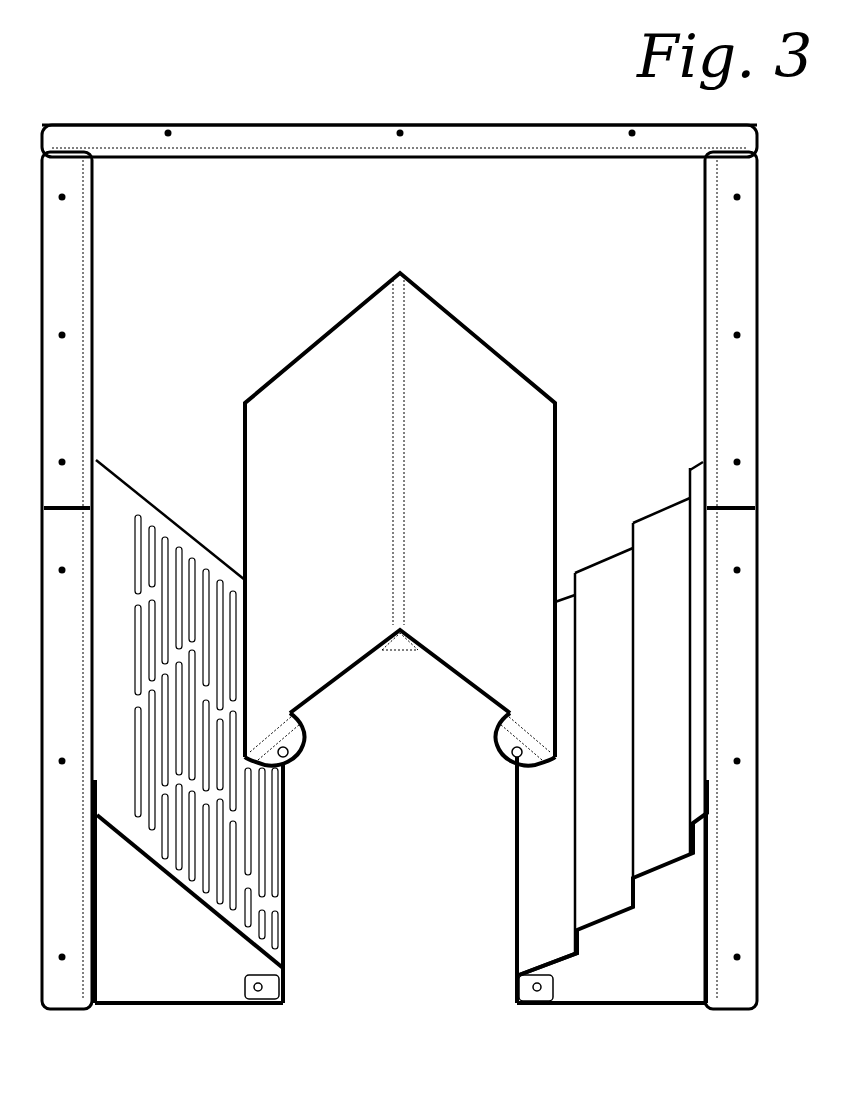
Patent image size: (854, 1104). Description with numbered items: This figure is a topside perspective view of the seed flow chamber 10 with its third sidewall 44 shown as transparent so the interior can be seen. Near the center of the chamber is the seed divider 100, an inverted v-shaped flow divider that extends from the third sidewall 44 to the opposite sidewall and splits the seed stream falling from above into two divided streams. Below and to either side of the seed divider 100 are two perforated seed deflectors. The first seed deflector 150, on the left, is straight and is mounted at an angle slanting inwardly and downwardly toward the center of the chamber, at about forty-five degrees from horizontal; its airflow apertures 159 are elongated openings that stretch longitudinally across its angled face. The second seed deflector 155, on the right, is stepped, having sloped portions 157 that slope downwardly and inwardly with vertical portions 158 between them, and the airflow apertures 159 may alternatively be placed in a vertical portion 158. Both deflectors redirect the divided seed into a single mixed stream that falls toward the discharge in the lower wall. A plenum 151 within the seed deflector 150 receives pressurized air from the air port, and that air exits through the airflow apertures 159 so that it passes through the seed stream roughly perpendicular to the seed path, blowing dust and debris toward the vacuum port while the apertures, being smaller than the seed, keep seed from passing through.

The seed flow chamber 10 is at (259, 108).
The third sidewall 44 is at (229, 281).
The seed divider 100 is at (472, 534).
The first seed deflector 150 is at (207, 908).
The plenum 151 is at (155, 1010).
The second seed deflector 155 is at (512, 912).
The sloped portions 157 is at (608, 920).
The vertical portions 158 is at (579, 942).
The airflow apertures 159 is at (284, 903).